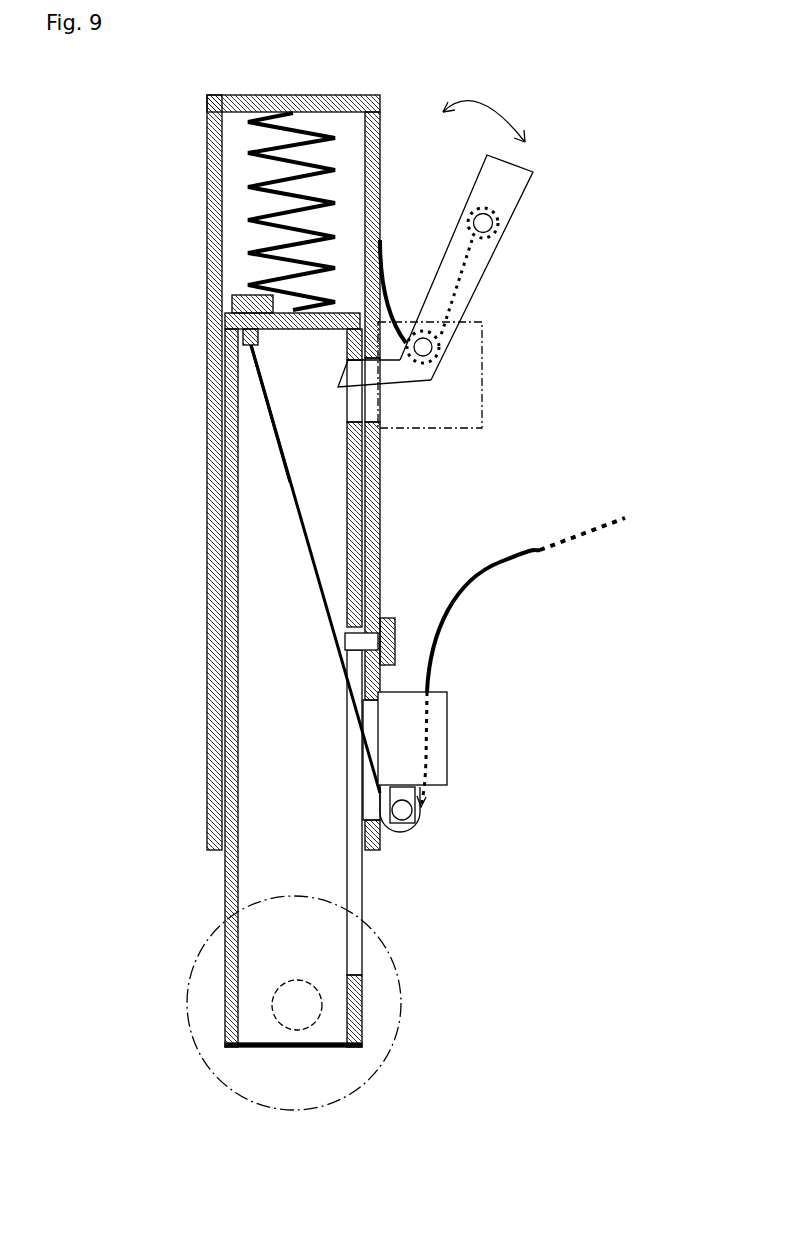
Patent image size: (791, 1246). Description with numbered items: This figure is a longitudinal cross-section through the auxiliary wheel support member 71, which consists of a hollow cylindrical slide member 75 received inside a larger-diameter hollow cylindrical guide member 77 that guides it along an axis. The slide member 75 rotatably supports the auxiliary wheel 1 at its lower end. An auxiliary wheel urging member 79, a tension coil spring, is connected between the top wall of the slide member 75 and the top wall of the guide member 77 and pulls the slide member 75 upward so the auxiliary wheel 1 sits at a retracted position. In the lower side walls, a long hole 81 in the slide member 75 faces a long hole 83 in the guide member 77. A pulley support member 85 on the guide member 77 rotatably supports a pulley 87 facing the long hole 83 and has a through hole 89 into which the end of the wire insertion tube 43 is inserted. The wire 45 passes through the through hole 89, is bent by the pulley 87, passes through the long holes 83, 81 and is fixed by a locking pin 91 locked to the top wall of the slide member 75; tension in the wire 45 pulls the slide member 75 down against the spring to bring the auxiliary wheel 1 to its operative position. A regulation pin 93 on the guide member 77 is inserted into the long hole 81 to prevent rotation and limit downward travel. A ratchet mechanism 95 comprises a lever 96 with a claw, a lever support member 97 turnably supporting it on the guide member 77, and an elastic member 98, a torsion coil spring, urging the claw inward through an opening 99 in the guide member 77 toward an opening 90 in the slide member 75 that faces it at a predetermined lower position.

The auxiliary wheel 1 is at (395, 1030).
The wire insertion tube 43 is at (520, 565).
The wire 45 is at (327, 627).
The auxiliary wheel support member 71 is at (207, 738).
The slide member 75 is at (227, 887).
The guide member 77 is at (207, 550).
The auxiliary wheel urging member 79 is at (268, 182).
The long hole 81 is at (355, 897).
The long hole 83 is at (370, 755).
The pulley support member 85 is at (448, 733).
The pulley 87 is at (410, 833).
The through hole 89 is at (433, 717).
The opening 90 is at (345, 407).
The locking pin 91 is at (243, 290).
The regulation pin 93 is at (397, 628).
The ratchet mechanism 95 is at (526, 187).
The lever 96 is at (487, 257).
The lever support member 97 is at (487, 347).
The elastic member 98 is at (395, 297).
The opening 99 is at (372, 407).